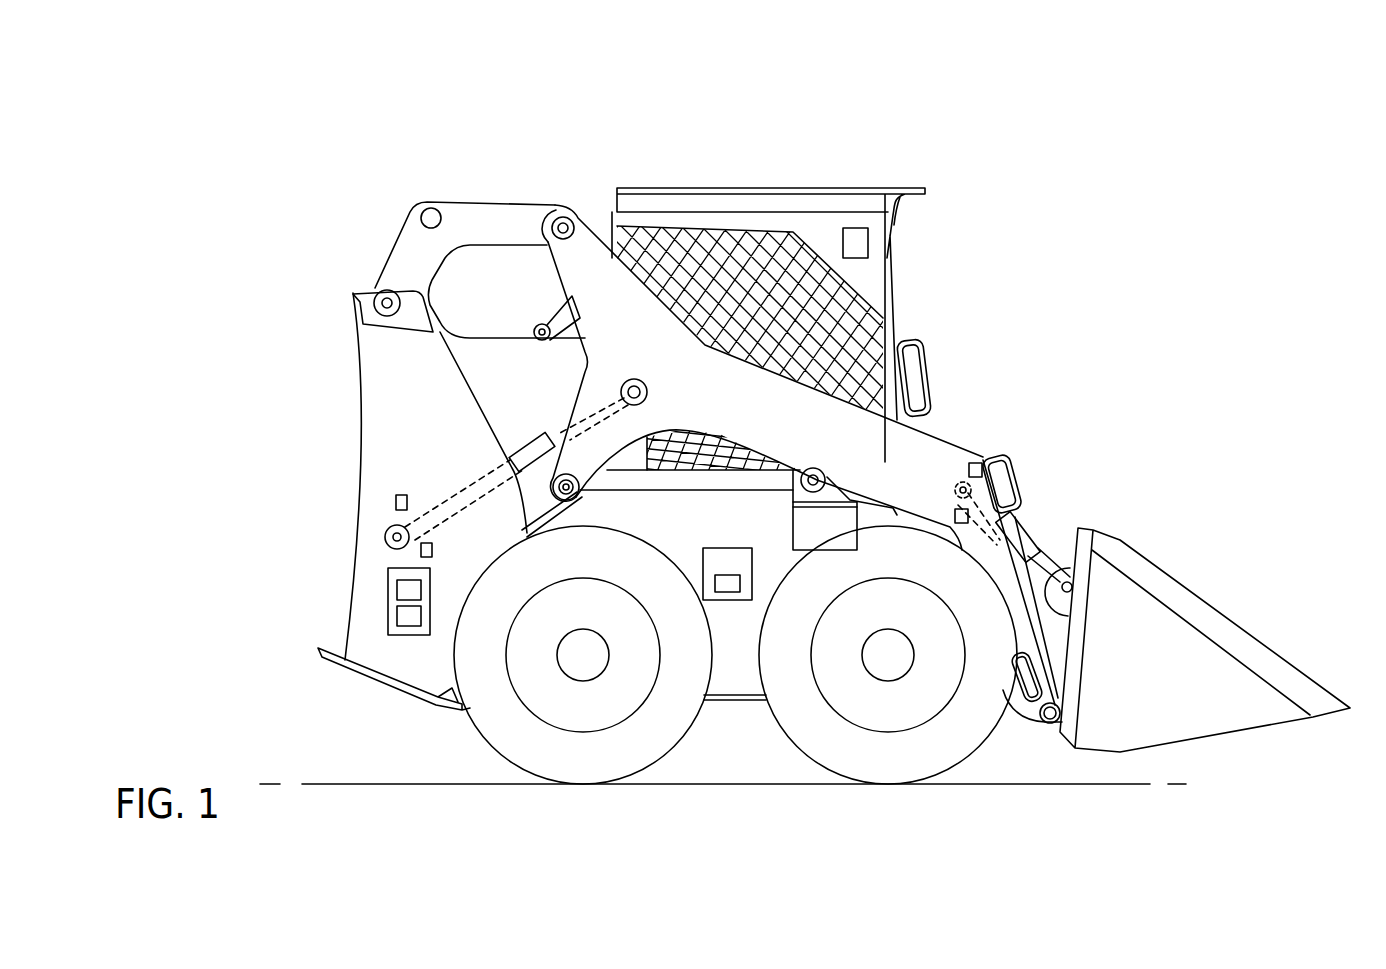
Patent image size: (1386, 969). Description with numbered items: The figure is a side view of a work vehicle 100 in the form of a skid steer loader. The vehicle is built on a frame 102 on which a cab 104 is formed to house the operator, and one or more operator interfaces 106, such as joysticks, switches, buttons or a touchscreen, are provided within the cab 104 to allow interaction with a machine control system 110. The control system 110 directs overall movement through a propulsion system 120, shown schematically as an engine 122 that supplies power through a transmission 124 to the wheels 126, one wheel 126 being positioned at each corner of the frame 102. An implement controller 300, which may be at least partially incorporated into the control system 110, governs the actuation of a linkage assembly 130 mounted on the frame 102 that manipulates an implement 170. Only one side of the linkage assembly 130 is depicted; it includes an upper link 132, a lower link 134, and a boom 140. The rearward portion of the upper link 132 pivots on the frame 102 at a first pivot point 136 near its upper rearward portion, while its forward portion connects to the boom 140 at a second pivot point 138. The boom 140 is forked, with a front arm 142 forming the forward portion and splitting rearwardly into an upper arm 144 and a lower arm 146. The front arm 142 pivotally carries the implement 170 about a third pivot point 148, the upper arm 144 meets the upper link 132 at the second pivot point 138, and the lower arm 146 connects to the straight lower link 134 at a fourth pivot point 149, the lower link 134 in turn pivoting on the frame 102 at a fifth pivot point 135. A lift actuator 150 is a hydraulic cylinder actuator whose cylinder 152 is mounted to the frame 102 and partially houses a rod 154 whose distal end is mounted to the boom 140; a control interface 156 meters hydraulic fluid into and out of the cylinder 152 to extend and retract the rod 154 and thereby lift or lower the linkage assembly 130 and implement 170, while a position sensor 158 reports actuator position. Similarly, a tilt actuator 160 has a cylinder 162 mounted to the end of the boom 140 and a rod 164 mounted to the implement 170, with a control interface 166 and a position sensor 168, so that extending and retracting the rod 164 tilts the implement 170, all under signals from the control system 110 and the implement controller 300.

The work vehicle 100 is at (1067, 255).
The frame 102 is at (380, 385).
The cab 104 is at (825, 316).
The operator interface 106 is at (853, 226).
The machine control system 110 is at (717, 548).
The propulsion system 120 is at (410, 637).
The engine 122 is at (396, 590).
The transmission 124 is at (396, 616).
The wheel 126 is at (958, 750).
The linkage assembly 130 is at (955, 428).
The upper link 132 is at (490, 220).
The lower link 134 is at (700, 480).
The fifth pivot point 135 is at (817, 477).
The first pivot point 136 is at (375, 297).
The second pivot point 138 is at (558, 221).
The boom 140 is at (708, 342).
The front arm 142 is at (1012, 455).
The upper arm 144 is at (587, 240).
The lower arm 146 is at (605, 450).
The third pivot point 148 is at (1065, 708).
The fourth pivot point 149 is at (572, 492).
The lift actuator 150 is at (516, 440).
The cylinder 152 is at (450, 490).
The rod 154 is at (597, 400).
The control interface 156 is at (393, 503).
The position sensor 158 is at (420, 548).
The tilt actuator 160 is at (1048, 533).
The cylinder 162 is at (1012, 521).
The rod 164 is at (1064, 612).
The control interface 166 is at (1023, 468).
The position sensor 168 is at (955, 515).
The implement 170 is at (1242, 627).
The implement controller 300 is at (728, 593).